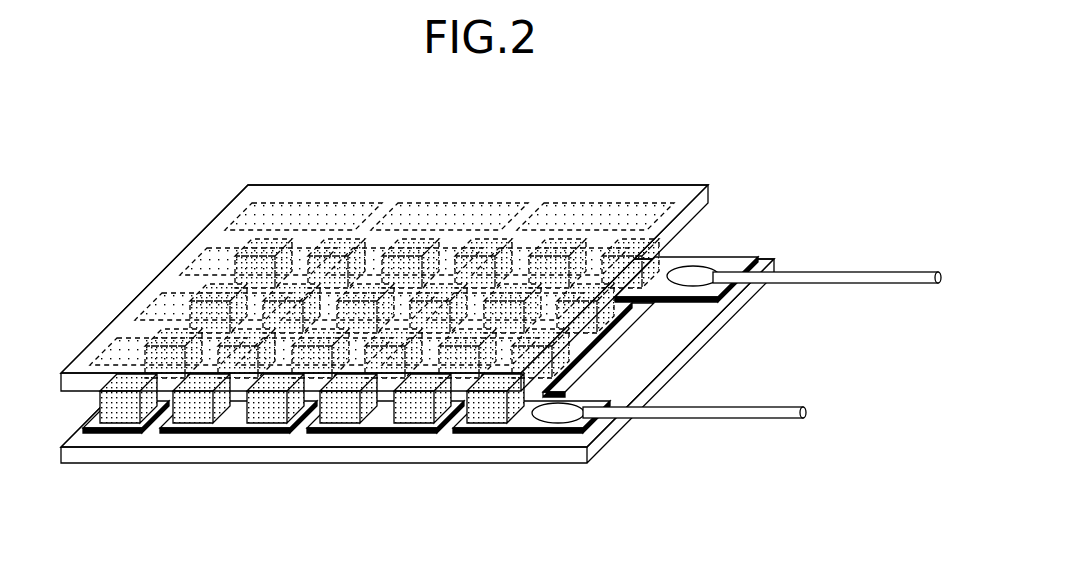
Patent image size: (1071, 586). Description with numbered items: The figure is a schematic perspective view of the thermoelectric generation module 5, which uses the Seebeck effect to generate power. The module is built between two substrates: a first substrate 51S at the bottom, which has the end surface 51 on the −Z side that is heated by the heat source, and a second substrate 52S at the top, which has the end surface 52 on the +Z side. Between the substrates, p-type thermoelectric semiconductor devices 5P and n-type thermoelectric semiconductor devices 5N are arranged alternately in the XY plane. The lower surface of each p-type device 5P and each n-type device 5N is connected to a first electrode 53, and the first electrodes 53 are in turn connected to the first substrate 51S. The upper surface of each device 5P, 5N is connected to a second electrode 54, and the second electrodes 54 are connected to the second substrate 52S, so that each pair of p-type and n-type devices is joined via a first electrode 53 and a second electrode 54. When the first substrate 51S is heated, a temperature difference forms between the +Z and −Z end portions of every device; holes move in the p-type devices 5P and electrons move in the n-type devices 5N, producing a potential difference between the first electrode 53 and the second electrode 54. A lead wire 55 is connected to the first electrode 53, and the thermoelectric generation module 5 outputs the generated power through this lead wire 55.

The thermoelectric generation module 5 is at (487, 331).
The p-type thermoelectric semiconductor device 5P is at (192, 414).
The n-type thermoelectric semiconductor device 5N is at (267, 414).
The end surface 51 is at (412, 463).
The first substrate 51S is at (62, 453).
The end surface 52 is at (537, 197).
The second substrate 52S is at (157, 277).
The first electrode 53 is at (338, 433).
The second electrode 54 is at (200, 298).
The lead wire 55 is at (738, 407).